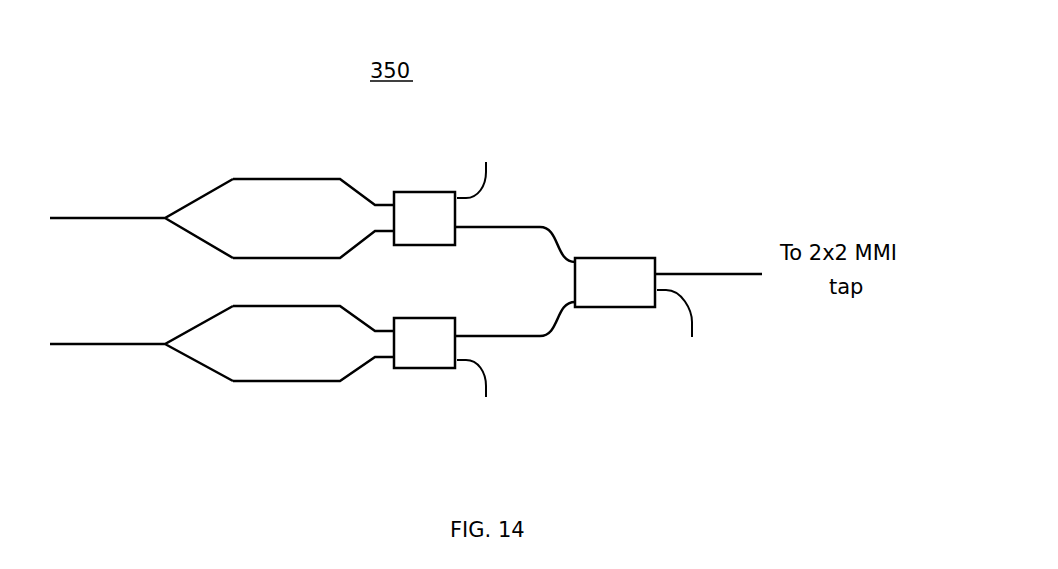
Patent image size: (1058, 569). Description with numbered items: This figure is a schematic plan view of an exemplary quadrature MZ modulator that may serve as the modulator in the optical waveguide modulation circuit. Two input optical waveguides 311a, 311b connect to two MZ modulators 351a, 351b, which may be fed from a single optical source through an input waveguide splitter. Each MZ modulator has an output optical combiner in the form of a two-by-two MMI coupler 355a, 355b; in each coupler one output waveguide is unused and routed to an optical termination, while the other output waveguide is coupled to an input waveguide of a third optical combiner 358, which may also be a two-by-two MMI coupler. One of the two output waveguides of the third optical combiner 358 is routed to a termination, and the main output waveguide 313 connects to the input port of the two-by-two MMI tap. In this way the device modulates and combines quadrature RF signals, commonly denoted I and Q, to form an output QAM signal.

The input optical waveguide 311a is at (141, 218).
The input optical waveguide 311b is at (141, 343).
The MZ modulator 351a is at (302, 146).
The MZ modulator 351b is at (344, 411).
The 2×2 MMI coupler 355a is at (422, 197).
The 2×2 MMI coupler 355b is at (428, 370).
The third optical combiner 358 is at (618, 308).
The main output waveguide 313 is at (670, 270).